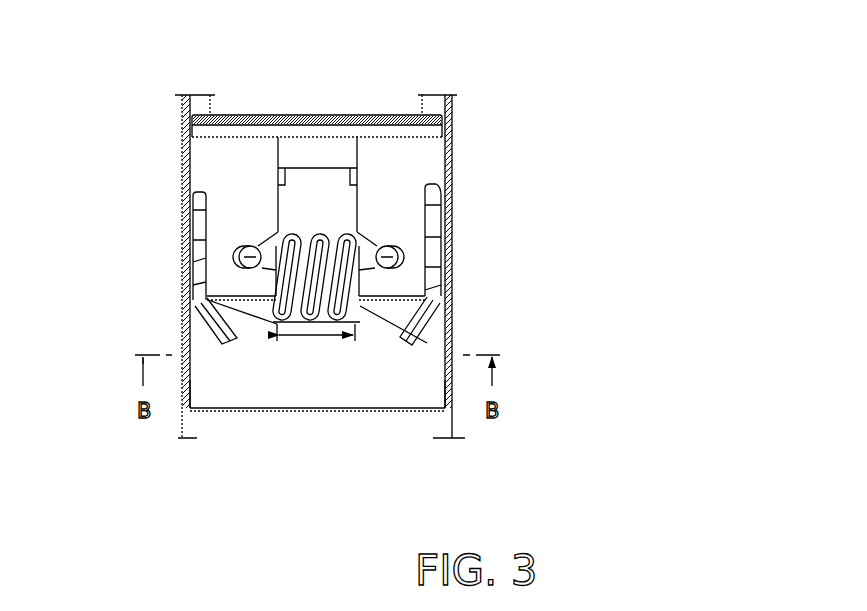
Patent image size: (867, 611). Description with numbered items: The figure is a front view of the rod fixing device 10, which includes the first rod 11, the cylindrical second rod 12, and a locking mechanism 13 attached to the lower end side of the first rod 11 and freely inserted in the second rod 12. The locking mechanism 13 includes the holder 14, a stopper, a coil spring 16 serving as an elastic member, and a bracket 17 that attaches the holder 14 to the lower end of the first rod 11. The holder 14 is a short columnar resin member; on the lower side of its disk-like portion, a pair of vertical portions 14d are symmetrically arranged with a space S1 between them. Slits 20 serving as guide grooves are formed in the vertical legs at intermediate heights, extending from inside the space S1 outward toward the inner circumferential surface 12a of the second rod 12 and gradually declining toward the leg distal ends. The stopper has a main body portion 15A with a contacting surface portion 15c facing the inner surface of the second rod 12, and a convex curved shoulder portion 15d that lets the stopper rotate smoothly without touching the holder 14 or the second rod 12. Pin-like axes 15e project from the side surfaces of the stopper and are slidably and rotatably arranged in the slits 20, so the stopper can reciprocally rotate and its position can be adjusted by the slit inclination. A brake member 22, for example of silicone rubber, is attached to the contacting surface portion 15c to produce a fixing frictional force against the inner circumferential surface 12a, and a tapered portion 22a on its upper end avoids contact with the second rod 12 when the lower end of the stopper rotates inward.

The rod fixing device 10 is at (184, 66).
The first rod 11 is at (431, 103).
The second rod 12 is at (447, 397).
The inner circumferential surface 12a is at (190, 380).
The locking mechanism 13 is at (449, 166).
The holder 14 is at (432, 150).
The vertical portions 14d is at (222, 212).
The main body portion 15A is at (189, 257).
The contacting surface portion 15c is at (225, 313).
The shoulder portion 15d is at (225, 236).
The axes 15e is at (250, 257).
The coil spring 16 is at (277, 341).
The bracket 17 is at (387, 118).
The slits 20 is at (263, 245).
The brake member 22 is at (218, 325).
The tapered portion 22a is at (212, 293).
The space S1 is at (325, 338).